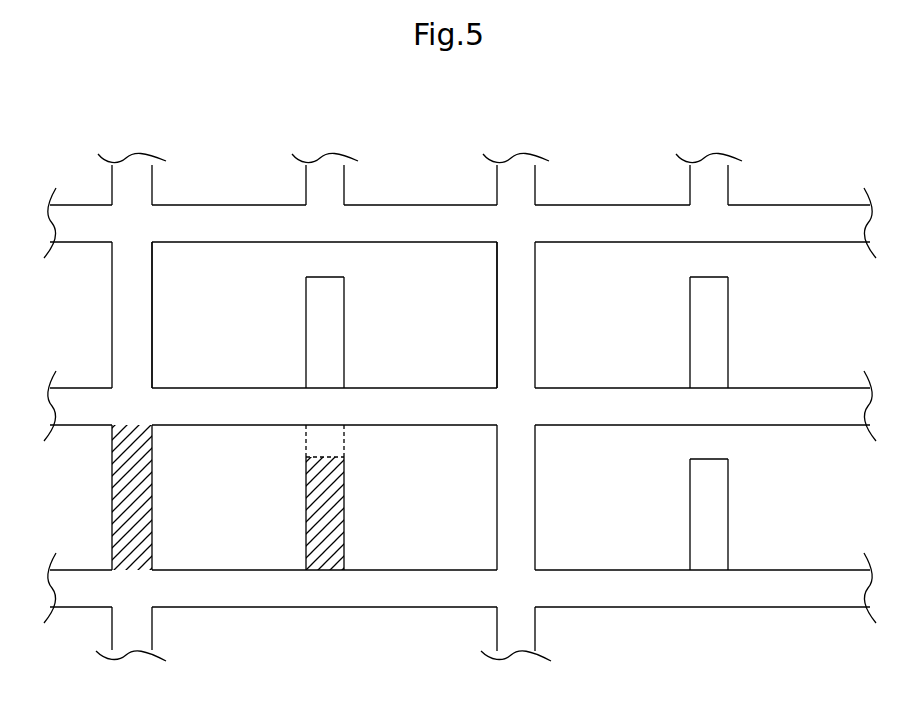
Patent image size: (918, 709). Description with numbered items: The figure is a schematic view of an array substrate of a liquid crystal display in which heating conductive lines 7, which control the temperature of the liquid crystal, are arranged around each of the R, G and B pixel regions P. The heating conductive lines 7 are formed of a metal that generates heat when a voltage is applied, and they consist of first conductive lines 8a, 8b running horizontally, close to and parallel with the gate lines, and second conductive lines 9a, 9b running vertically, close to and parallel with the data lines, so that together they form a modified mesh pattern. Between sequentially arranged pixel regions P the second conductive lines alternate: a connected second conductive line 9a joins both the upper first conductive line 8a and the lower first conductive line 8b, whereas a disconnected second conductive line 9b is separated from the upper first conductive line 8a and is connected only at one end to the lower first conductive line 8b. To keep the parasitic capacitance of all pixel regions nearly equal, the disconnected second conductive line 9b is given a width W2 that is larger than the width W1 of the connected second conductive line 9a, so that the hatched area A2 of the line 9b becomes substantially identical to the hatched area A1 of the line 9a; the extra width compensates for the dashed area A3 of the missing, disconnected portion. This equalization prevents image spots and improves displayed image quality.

The heating conductive lines 7 is at (83, 93).
The first conductive line 8a is at (818, 205).
The first conductive line 8b is at (820, 388).
The second conductive line 9a is at (112, 497).
The second conductive line 9b is at (306, 518).
The pixel region P is at (423, 268).
The width W1 is at (60, 318).
The width W2 is at (396, 318).
The area A1 is at (132, 497).
The area A2 is at (325, 513).
The area A3 is at (325, 441).